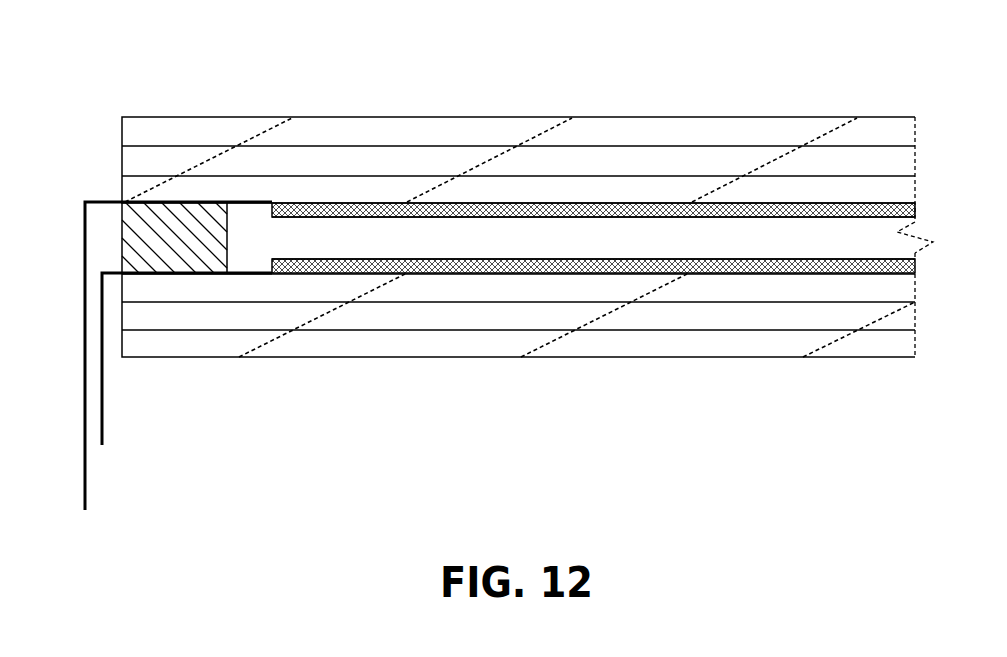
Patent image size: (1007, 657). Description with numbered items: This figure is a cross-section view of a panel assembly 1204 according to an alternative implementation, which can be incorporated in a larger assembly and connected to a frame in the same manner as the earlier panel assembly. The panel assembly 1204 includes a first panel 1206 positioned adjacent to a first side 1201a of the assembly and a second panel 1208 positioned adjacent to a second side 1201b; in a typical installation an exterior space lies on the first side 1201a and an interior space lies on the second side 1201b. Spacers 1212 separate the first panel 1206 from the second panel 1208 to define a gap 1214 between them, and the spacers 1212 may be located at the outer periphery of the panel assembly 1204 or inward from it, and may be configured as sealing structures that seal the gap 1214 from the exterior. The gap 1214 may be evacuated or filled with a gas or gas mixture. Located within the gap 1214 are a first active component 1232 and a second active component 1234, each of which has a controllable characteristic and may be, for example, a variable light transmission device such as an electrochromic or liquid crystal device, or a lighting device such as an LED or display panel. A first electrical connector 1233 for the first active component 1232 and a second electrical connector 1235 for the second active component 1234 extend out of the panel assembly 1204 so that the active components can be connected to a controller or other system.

The panel assembly 1204 is at (100, 66).
The first side 1201a is at (760, 101).
The second side 1201b is at (785, 397).
The first panel 1206 is at (833, 117).
The second panel 1208 is at (832, 357).
The spacers 1212 is at (176, 237).
The gap 1214 is at (650, 227).
The first active component 1232 is at (329, 213).
The second active component 1234 is at (326, 262).
The first electrical connector 1233 is at (102, 420).
The second electrical connector 1235 is at (85, 500).